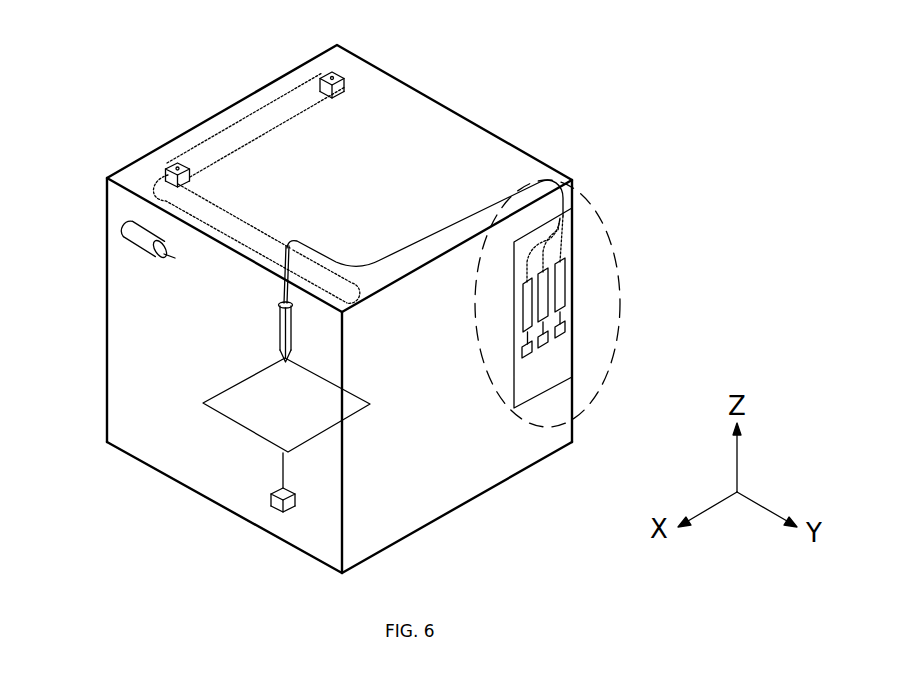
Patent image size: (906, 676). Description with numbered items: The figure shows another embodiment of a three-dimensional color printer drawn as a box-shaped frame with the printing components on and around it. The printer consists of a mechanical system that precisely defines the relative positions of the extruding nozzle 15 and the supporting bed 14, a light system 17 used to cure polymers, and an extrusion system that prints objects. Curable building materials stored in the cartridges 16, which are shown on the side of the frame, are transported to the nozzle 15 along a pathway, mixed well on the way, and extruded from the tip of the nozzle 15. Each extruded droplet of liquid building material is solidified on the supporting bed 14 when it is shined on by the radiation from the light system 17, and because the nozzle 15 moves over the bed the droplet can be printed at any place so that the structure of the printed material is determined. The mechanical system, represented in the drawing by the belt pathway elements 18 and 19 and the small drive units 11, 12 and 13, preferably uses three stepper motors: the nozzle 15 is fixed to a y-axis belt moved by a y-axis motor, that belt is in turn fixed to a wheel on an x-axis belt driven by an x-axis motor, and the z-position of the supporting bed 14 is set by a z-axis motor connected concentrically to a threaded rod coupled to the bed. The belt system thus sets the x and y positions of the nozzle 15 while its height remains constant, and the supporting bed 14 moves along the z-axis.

The first electronic component 11 is at (347, 83).
The second electronic component 12 is at (167, 167).
The third electronic component 13 is at (281, 513).
The supporting bed 14 is at (218, 412).
The extruding nozzle 15 is at (278, 333).
The cartridges 16 is at (622, 317).
The light system 17 is at (121, 224).
The conduit 18 is at (265, 222).
The conduit 19 is at (262, 100).